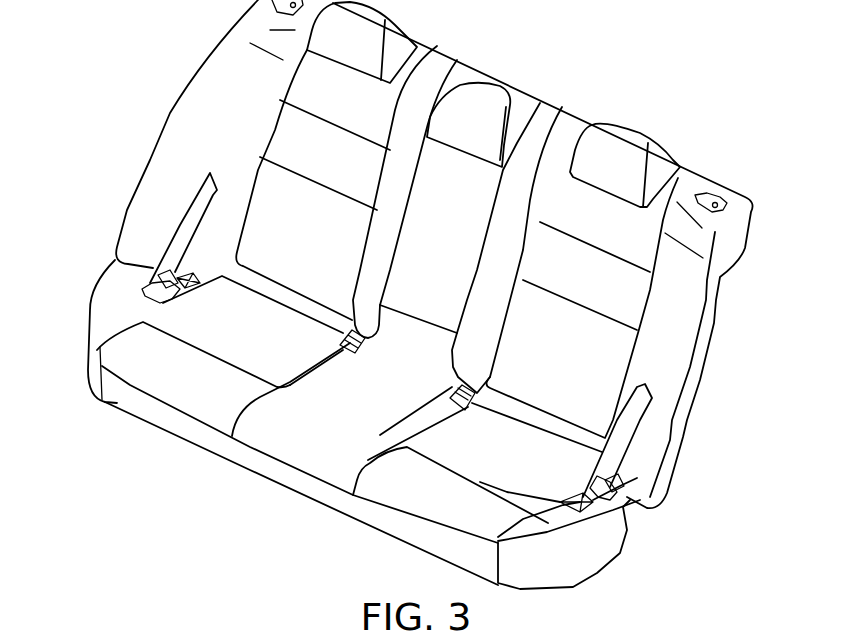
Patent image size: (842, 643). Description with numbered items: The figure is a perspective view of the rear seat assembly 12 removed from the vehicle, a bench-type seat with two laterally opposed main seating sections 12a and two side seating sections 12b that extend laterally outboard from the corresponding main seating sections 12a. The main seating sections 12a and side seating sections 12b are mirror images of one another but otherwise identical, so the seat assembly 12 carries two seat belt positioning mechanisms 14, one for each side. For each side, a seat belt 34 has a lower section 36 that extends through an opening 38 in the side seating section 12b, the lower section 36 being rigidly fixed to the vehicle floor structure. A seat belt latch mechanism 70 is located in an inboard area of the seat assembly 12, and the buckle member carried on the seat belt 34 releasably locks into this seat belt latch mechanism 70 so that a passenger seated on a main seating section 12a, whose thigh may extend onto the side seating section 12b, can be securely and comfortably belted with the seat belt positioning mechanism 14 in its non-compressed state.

The seat assembly 12 is at (168, 113).
The main seating section 12a is at (160, 362).
The side seating section 12b is at (113, 313).
The seat belt positioning mechanism 14 is at (192, 280).
The seat belt 34 is at (205, 200).
The lower section 36 is at (165, 273).
The opening 38 is at (145, 292).
The seat belt latch mechanism 70 is at (362, 353).